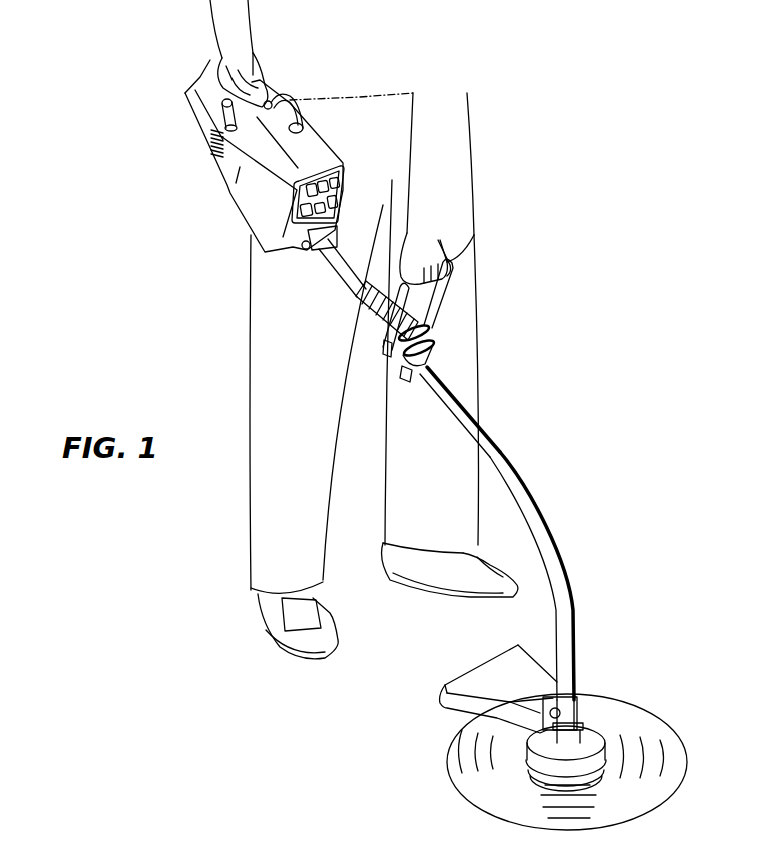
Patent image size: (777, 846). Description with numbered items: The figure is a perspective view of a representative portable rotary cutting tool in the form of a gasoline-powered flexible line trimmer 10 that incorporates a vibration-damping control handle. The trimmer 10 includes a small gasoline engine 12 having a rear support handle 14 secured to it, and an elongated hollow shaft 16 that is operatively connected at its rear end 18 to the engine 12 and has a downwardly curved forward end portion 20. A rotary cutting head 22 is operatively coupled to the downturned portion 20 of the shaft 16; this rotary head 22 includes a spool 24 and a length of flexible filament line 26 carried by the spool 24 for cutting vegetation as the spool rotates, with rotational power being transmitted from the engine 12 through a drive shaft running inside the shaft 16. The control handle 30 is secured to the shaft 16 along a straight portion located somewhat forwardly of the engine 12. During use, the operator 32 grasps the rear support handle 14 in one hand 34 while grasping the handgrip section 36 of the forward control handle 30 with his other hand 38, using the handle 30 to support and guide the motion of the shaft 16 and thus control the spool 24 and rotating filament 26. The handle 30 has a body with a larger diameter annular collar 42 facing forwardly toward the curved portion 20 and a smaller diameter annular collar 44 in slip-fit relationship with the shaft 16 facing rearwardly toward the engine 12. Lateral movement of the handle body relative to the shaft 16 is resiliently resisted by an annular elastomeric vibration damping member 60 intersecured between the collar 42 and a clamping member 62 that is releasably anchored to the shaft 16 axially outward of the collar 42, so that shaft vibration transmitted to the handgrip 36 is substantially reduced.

The flexible line trimmer 10 is at (440, 444).
The gasoline engine 12 is at (222, 182).
The rear support handle 14 is at (213, 60).
The elongated hollow shaft 16 is at (467, 394).
The rear end 18 is at (335, 265).
The downwardly curved forward end portion 20 is at (574, 605).
The rotary cutting head 22 is at (619, 749).
The spool 24 is at (597, 780).
The flexible filament line 26 is at (640, 817).
The control handle 30 is at (425, 320).
The operator 32 is at (245, 345).
The hand 34 is at (257, 55).
The handgrip section 36 is at (458, 280).
The other hand 38 is at (428, 263).
The annular collar 42 is at (396, 355).
The annular collar 44 is at (362, 298).
The elastomeric vibration damping member 60 is at (445, 337).
The clamping member 62 is at (447, 353).